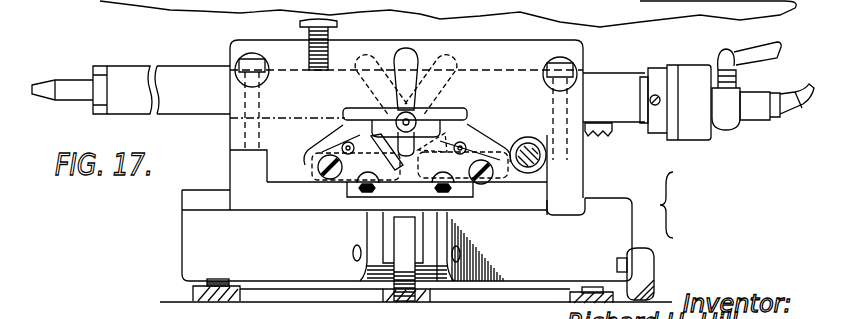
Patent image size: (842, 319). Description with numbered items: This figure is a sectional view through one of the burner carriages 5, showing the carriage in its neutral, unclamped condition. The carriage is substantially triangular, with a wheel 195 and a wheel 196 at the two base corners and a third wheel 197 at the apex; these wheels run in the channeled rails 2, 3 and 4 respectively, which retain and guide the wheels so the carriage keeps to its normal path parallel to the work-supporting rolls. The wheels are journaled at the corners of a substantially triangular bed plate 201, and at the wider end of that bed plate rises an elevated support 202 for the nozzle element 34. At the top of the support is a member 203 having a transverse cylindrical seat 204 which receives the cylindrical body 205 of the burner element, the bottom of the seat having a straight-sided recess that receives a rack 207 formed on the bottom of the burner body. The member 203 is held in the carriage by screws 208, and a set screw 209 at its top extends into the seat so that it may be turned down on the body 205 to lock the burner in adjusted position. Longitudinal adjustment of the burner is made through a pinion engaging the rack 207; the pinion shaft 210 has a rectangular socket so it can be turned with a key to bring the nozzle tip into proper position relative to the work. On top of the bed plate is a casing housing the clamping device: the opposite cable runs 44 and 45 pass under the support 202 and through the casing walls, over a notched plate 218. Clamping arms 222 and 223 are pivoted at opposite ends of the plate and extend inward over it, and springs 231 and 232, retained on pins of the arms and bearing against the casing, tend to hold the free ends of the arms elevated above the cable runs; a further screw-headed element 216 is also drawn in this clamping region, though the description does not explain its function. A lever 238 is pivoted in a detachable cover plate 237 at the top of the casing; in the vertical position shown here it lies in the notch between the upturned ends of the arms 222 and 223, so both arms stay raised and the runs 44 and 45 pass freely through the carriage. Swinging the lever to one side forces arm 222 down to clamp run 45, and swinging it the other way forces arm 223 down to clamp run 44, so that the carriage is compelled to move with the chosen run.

The rail 2 is at (202, 302).
The rail 3 is at (390, 302).
The rail 4 is at (573, 294).
The carriage 5 is at (697, 218).
The nozzle element 34 is at (72, 85).
The run of the cable 44 is at (447, 188).
The run of the cable 45 is at (362, 189).
The wheel 195 is at (204, 281).
The wheel 196 is at (592, 288).
The third wheel 197 is at (403, 228).
The bed plate 201 is at (288, 207).
The elevated support 202 is at (578, 180).
The member 203 is at (584, 58).
The transverse cylindrical seat 204 is at (530, 72).
The cylindrical body 205 is at (182, 72).
The rack 207 is at (611, 133).
The screws 208 is at (249, 62).
The set screw 209 is at (333, 33).
The pinion shaft 210 is at (547, 143).
The screw 216 is at (495, 168).
The plate 218 is at (402, 197).
The clamping arm 222 is at (317, 166).
The clamping arm 223 is at (538, 186).
The spring 231 is at (343, 122).
The spring 232 is at (455, 128).
The detachable cover plate 237 is at (444, 117).
The lever 238 is at (418, 52).